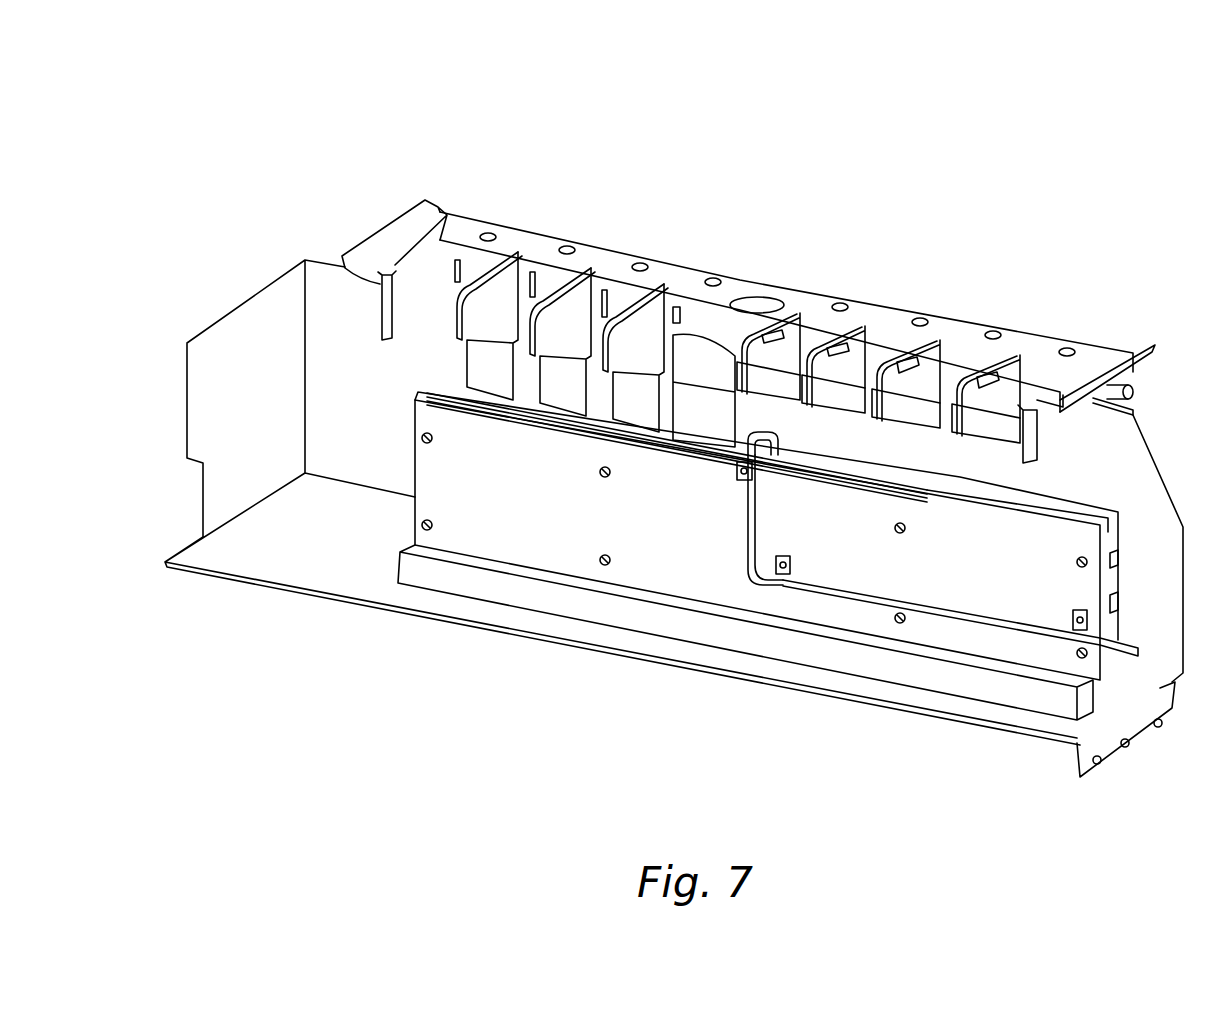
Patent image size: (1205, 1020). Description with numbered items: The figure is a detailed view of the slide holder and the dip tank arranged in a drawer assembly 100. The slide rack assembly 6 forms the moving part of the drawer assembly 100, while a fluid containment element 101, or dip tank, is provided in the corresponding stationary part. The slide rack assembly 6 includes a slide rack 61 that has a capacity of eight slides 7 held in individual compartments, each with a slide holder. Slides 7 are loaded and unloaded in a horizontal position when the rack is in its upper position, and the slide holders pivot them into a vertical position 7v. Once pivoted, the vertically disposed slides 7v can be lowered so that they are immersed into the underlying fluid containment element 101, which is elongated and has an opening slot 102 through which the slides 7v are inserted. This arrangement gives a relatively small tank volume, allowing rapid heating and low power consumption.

The slide rack assembly 6 is at (745, 180).
The slide rack 61 is at (518, 243).
The slides 7 is at (863, 383).
The slides in vertical position 7v is at (647, 390).
The drawer assembly 100 is at (443, 677).
The fluid containment element 101 is at (972, 588).
The opening slot 102 is at (872, 478).